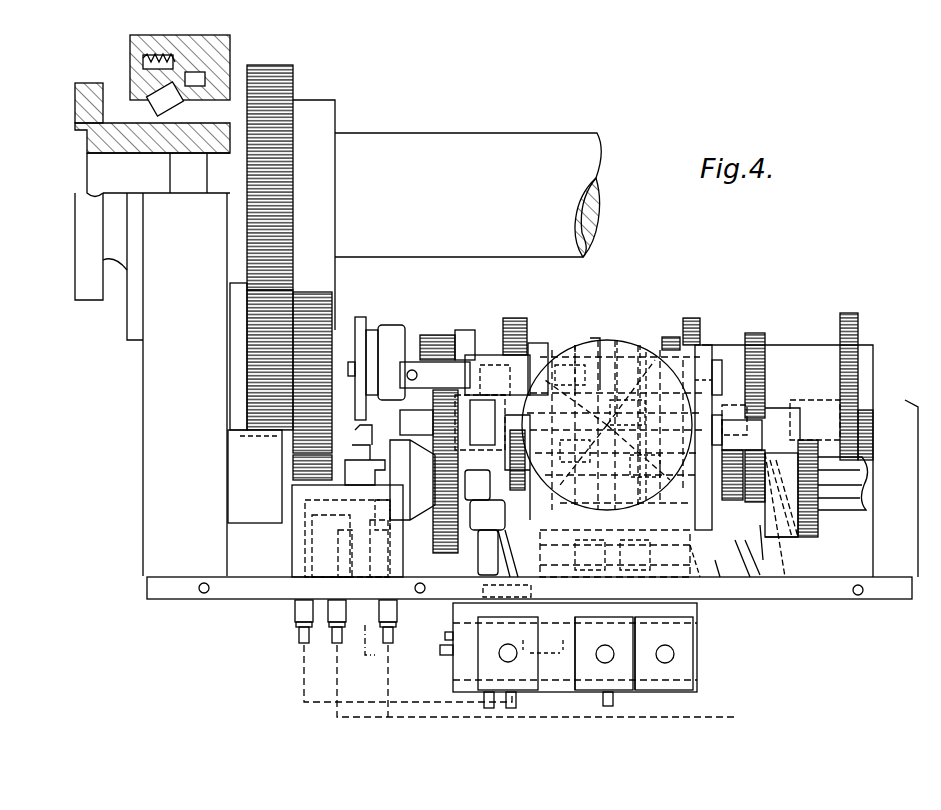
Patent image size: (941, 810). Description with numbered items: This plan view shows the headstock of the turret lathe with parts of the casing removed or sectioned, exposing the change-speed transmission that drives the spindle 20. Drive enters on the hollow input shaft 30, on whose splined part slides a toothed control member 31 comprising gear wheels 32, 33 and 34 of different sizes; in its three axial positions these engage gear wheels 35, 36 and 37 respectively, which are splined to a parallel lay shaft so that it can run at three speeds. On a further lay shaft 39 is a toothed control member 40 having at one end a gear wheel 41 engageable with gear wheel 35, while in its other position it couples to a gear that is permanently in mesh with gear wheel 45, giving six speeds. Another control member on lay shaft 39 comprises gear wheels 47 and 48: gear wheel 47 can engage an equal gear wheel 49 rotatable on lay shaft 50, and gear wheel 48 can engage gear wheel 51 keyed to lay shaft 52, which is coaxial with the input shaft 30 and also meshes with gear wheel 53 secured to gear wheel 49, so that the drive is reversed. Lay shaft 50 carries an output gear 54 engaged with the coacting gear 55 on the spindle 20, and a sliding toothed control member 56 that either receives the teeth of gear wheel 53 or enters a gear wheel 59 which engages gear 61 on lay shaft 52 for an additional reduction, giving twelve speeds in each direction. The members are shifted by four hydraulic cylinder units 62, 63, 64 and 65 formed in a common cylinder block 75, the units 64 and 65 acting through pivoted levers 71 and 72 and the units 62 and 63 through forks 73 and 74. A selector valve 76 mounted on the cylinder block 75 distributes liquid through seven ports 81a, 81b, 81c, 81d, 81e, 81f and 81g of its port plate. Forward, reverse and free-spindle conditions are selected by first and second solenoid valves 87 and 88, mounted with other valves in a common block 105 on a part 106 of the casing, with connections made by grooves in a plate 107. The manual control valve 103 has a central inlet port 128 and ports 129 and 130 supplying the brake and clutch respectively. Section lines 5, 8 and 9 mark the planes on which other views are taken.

The spindle 20 is at (430, 152).
The coacting gear 55 is at (278, 97).
The output gear 54 is at (262, 356).
The fork 73 is at (372, 330).
The toothed control member 56 is at (392, 333).
The lay shaft 50 is at (413, 340).
The gear wheel 53 is at (437, 335).
The gear wheel 48 is at (460, 355).
The gear wheel 47 is at (486, 355).
The gear wheel 49 is at (513, 320).
The cylinder block 75 is at (549, 343).
The port 81e is at (575, 345).
The selector valve 76 is at (597, 340).
The port 81f is at (617, 340).
The hydraulic cylinder unit 62 is at (640, 345).
The hydraulic cylinder unit 63 is at (646, 352).
The gear wheel 45 is at (670, 337).
The gear wheel 37 is at (692, 322).
The port 81g is at (702, 380).
The gear wheel 36 is at (755, 335).
The toothed control member 40 is at (815, 410).
The gear wheel 35 is at (850, 315).
The gear wheel 41 is at (862, 460).
The input shaft 30 is at (862, 500).
The gear wheel 32 is at (815, 520).
The toothed control member 31 is at (805, 535).
The fork 74 is at (790, 540).
The gear wheel 33 is at (760, 530).
The gear wheel 34 is at (748, 545).
The pivoted lever 72 is at (740, 555).
The hydraulic cylinder unit 64 is at (718, 580).
The hydraulic cylinder unit 65 is at (692, 560).
The gear wheel 51 is at (440, 542).
The lay shaft 39 is at (430, 428).
The switch 8 is at (372, 435).
The port 81d is at (428, 520).
The lay shaft 52 is at (327, 480).
The gear wheel 59 is at (312, 436).
The gear 61 is at (308, 470).
The manual control valve 103 is at (300, 538).
The port 130 is at (400, 510).
The part of headstock casing 106 is at (440, 582).
The inlet port 128 is at (300, 600).
The port 129 is at (292, 580).
The common block 105 is at (453, 670).
The plate 107 is at (455, 615).
The section line 9 is at (542, 657).
The first solenoid valve 87 is at (590, 674).
The second solenoid valve 88 is at (663, 674).
The port 81c is at (615, 553).
The port 81b is at (561, 590).
The port 81a is at (613, 435).
The pivoted lever 71 is at (485, 562).
The section line 5 is at (742, 435).